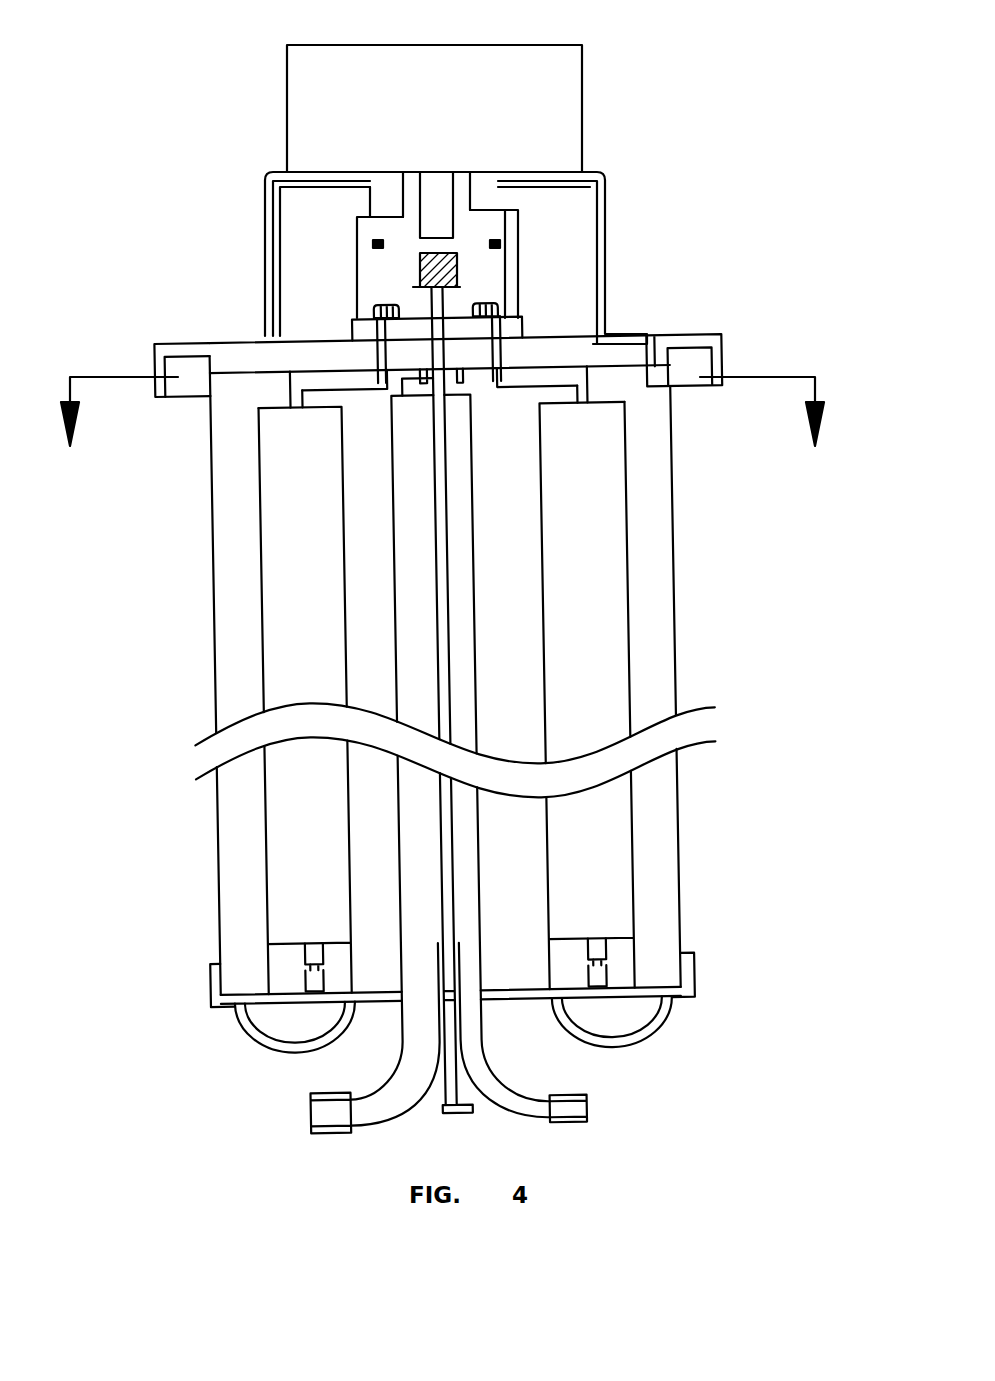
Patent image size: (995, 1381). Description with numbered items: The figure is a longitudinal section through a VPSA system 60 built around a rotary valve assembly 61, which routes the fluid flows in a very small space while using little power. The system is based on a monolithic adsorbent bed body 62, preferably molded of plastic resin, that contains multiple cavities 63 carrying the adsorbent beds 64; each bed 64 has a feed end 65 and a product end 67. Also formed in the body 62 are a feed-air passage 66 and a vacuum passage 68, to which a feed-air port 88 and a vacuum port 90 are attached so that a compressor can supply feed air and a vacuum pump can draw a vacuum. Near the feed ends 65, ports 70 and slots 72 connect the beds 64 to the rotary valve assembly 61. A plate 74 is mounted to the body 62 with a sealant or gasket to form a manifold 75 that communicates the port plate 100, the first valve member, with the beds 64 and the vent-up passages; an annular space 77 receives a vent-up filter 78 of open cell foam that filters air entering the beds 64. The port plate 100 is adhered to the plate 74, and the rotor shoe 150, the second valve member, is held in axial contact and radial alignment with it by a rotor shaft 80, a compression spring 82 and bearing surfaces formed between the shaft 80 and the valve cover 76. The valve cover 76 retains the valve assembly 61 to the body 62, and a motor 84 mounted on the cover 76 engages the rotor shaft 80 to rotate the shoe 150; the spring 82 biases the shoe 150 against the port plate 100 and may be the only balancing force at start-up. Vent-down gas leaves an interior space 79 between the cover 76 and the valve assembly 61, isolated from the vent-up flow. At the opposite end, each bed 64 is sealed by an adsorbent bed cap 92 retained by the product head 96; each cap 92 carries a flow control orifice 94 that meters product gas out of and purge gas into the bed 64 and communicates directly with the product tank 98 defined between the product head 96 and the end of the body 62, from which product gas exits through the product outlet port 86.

The VPSA system 60 is at (95, 285).
The rotary valve assembly 61 is at (250, 170).
The adsorbent bed body 62 is at (685, 562).
The cavities 63 is at (262, 608).
The adsorbent beds 64 is at (280, 682).
The feed end 65 is at (282, 452).
The feed-air passage 66 is at (490, 893).
The product end 67 is at (618, 902).
The vacuum passage 68 is at (400, 892).
The ports 70 is at (590, 388).
The slots 72 is at (582, 380).
The plate 74 is at (322, 332).
The manifold 75 is at (305, 356).
The valve cover 76 is at (264, 215).
The annular space 77 is at (190, 368).
The vent-up filter 78 is at (180, 400).
The interior space 79 is at (320, 215).
The rotor shaft 80 is at (472, 263).
The compression spring 82 is at (400, 268).
The motor 84 is at (287, 70).
The product outlet port 86 is at (445, 1110).
The feed-air port 88 is at (572, 1125).
The vacuum port 90 is at (325, 1135).
The adsorbent bed cap 92 is at (288, 985).
The flow control orifice 94 is at (313, 967).
The product head 96 is at (602, 1045).
The product tank 98 is at (628, 1015).
The port plate 100 is at (522, 332).
The rotor shoe 150 is at (518, 223).